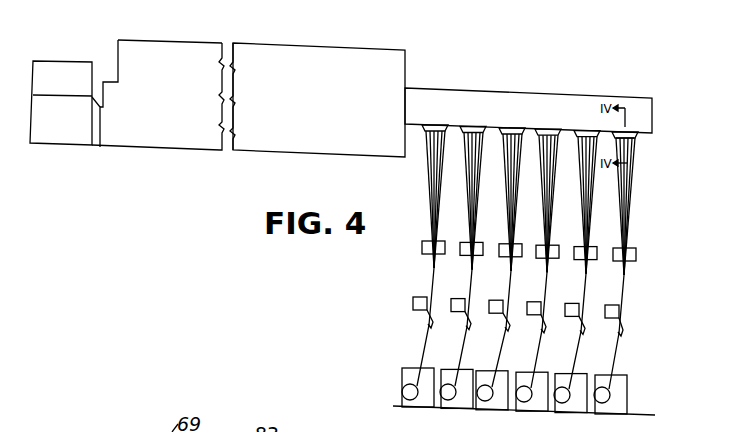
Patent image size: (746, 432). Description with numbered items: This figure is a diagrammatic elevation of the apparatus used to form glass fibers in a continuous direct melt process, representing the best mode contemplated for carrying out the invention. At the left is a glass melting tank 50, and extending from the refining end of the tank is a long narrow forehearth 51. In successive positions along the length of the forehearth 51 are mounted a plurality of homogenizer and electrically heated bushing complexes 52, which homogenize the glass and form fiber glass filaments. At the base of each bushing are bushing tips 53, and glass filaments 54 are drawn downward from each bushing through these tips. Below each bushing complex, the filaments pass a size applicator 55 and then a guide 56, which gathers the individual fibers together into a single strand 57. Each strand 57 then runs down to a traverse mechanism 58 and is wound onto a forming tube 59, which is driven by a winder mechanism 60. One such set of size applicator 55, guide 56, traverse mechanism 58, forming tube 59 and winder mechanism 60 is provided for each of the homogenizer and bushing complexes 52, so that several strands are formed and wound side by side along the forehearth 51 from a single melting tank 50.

The glass melting tank 50 is at (282, 43).
The forehearth 51 is at (516, 84).
The homogenizer and electrically heated bushing complex 52 is at (637, 134).
The bushing tips 53 is at (634, 141).
The glass filaments 54 is at (625, 193).
The size applicator 55 is at (636, 254).
The guide 56 is at (621, 323).
The strand 57 is at (621, 347).
The traverse mechanism 58 is at (609, 389).
The forming tube 59 is at (611, 397).
The winder mechanism 60 is at (626, 411).